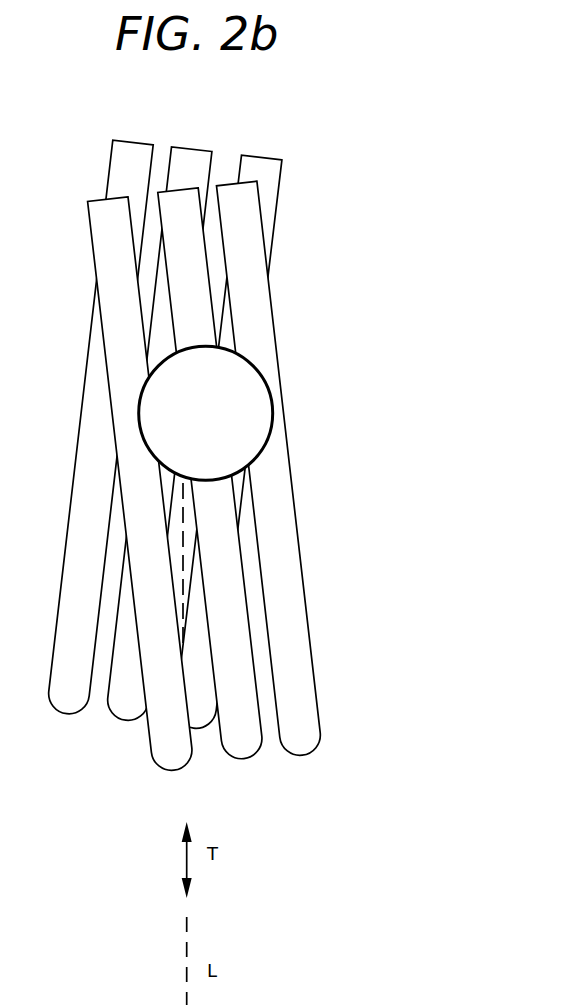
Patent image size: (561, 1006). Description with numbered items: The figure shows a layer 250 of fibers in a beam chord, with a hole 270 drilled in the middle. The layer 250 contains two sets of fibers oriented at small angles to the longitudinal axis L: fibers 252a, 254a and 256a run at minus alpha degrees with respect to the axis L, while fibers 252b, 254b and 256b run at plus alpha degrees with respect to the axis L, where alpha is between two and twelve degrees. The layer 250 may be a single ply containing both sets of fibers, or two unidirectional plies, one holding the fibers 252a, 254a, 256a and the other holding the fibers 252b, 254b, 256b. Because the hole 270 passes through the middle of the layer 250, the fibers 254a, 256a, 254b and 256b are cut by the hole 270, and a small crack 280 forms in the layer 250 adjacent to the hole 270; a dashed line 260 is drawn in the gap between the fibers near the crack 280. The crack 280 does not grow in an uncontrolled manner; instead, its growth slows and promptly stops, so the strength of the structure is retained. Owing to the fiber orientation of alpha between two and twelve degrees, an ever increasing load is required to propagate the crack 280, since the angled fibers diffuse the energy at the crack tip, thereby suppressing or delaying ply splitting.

The layer 250 is at (117, 828).
The fiber 252a is at (163, 767).
The fiber 252b is at (137, 142).
The fiber 254a is at (247, 762).
The fiber 254b is at (193, 148).
The fiber 256a is at (308, 753).
The fiber 256b is at (263, 157).
The hidden tie line 260 is at (183, 548).
The hole 270 is at (188, 425).
The crack 280 is at (187, 522).